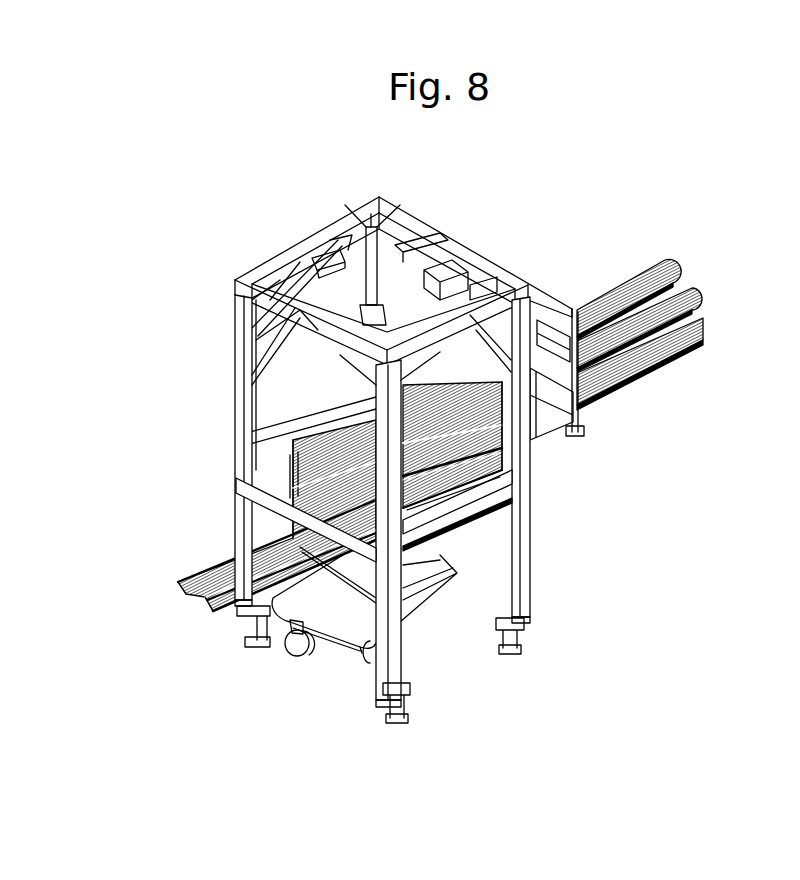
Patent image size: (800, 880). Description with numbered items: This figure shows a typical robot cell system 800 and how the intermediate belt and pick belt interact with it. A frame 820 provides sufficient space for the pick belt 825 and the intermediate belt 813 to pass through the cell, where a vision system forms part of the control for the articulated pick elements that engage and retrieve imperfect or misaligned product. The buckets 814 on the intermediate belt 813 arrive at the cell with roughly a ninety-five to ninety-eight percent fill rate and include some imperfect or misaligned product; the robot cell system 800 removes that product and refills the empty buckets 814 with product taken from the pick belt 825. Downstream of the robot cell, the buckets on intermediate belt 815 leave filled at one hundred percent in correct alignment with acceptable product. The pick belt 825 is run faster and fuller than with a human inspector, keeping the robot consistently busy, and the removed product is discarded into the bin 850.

The robot cell system 800 is at (548, 240).
The frame 820 is at (452, 223).
The pick belt 825 is at (675, 262).
The intermediate belt 813 is at (695, 293).
The buckets 814 is at (647, 375).
The intermediate belt 815 is at (210, 608).
The bin 850 is at (433, 592).